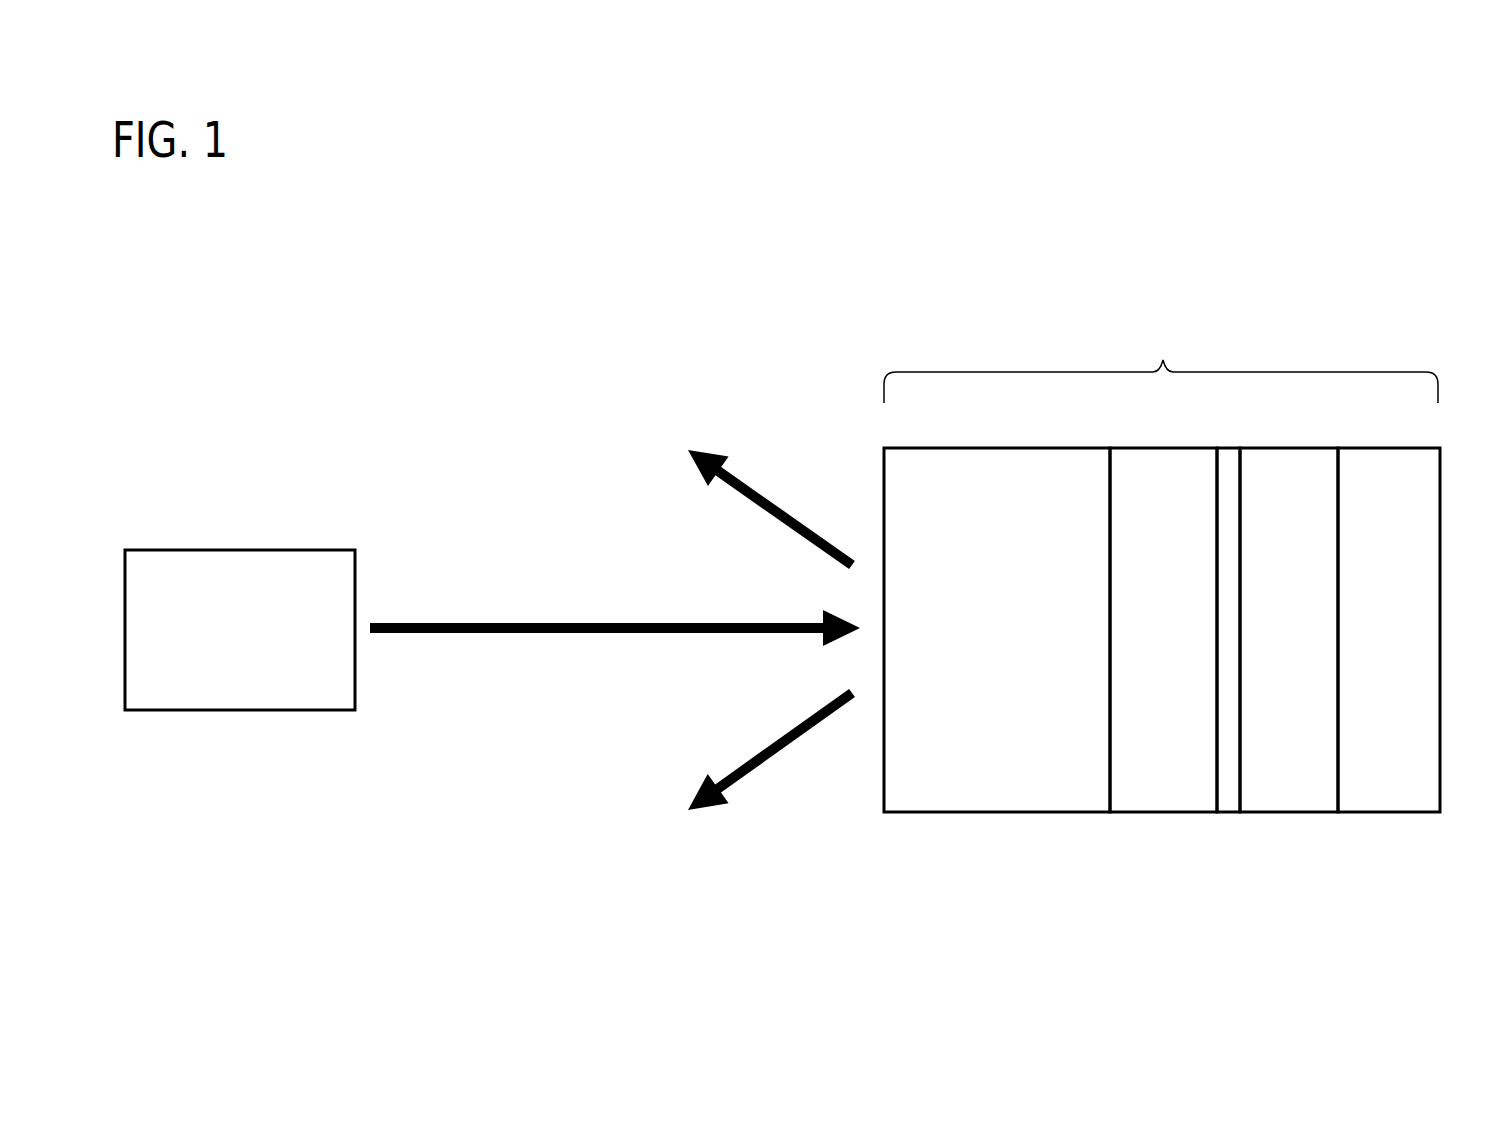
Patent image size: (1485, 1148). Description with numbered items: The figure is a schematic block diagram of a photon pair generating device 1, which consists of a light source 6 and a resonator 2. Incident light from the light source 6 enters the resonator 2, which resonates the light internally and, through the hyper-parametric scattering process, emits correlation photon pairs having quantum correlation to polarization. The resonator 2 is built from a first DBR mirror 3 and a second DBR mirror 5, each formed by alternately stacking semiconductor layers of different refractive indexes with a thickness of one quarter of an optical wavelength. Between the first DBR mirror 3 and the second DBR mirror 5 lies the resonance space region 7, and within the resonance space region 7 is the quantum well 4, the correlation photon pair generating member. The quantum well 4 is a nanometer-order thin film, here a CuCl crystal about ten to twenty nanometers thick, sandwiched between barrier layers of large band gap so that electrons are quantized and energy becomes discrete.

The photon pair generating device 1 is at (1445, 279).
The resonator 2 is at (1163, 360).
The first DBR mirror 3 is at (1010, 448).
The quantum well 4 is at (1238, 448).
The second DBR mirror 5 is at (1390, 448).
The light source 6 is at (283, 550).
The resonance space region 7 is at (1172, 448).